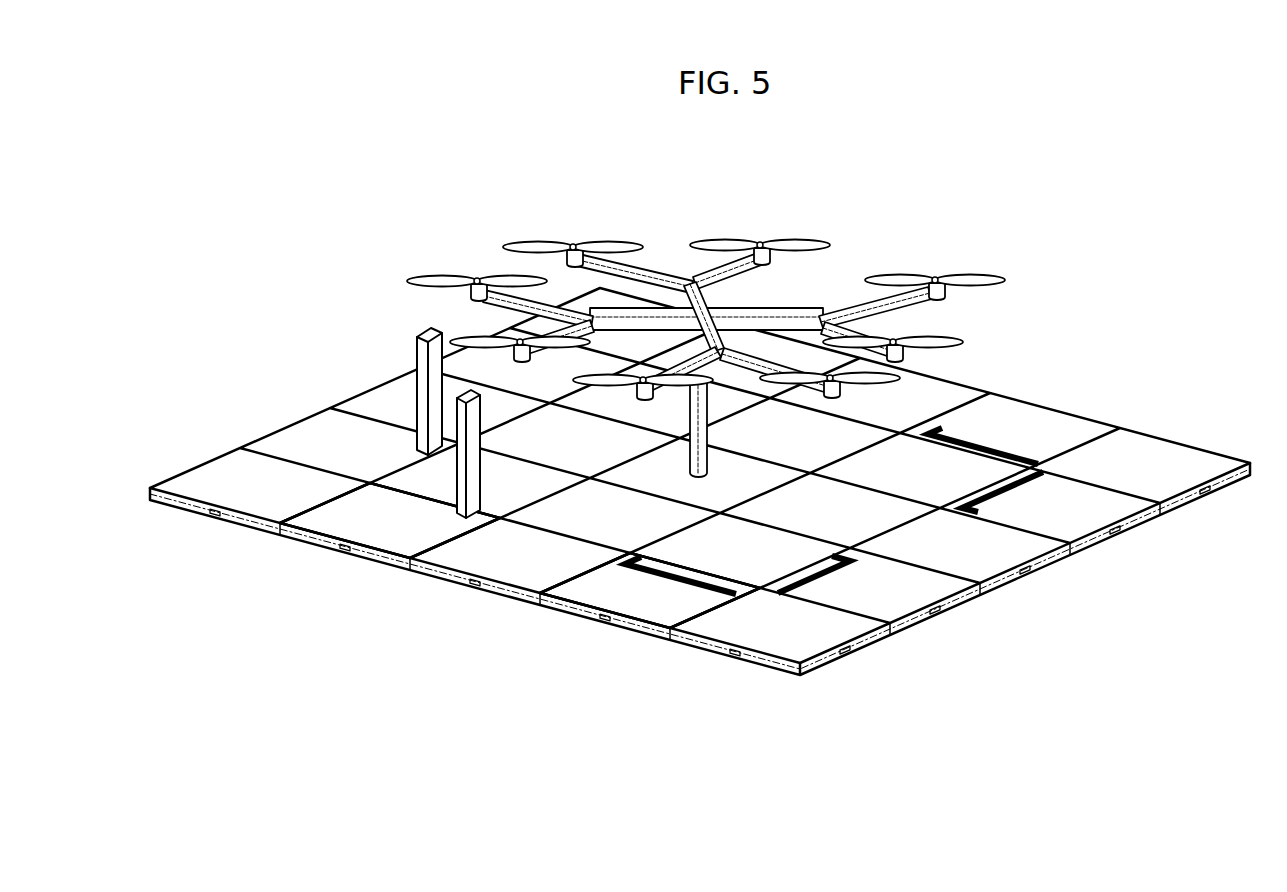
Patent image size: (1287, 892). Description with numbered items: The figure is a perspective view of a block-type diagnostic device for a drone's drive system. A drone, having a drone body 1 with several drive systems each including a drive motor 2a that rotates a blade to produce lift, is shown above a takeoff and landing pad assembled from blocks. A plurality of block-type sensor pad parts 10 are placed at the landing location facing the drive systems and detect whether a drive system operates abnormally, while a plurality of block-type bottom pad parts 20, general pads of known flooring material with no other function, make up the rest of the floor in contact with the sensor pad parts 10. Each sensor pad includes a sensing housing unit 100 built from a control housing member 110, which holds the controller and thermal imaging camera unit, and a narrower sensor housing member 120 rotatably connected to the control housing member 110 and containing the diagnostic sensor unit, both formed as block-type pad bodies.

The drone body 1 is at (687, 280).
The drive motor 2a is at (790, 265).
The block-type sensor pad part 10 is at (635, 760).
The block-type bottom pad part 20 is at (645, 517).
The sensing housing unit 100 is at (415, 712).
The control housing member 110 is at (367, 517).
The sensor housing member 120 is at (460, 477).